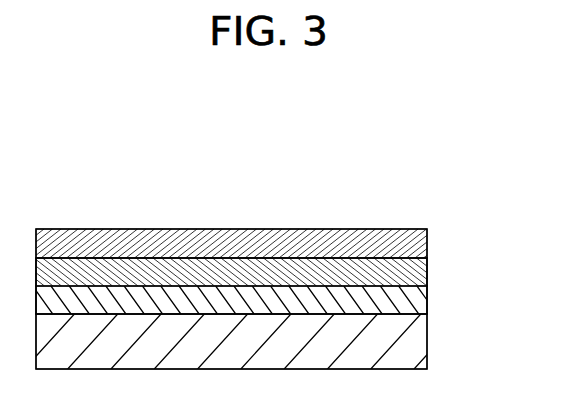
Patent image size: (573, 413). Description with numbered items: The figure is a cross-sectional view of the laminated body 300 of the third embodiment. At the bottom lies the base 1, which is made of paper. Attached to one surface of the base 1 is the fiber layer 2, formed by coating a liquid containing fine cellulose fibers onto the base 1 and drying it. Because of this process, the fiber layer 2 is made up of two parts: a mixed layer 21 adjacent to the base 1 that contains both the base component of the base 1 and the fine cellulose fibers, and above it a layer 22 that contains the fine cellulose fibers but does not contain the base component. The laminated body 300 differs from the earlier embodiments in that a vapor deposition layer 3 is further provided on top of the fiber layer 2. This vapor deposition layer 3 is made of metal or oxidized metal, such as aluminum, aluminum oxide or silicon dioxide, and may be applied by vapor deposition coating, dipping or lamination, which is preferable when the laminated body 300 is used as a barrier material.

The laminated body 300 is at (194, 185).
The vapor deposition layer 3 is at (403, 244).
The layer that does not contain the base component but contains the fine cellulose f 22 is at (403, 270).
The mixed layer 21 is at (403, 299).
The fiber layer 2 is at (521, 257).
The base 1 is at (403, 345).